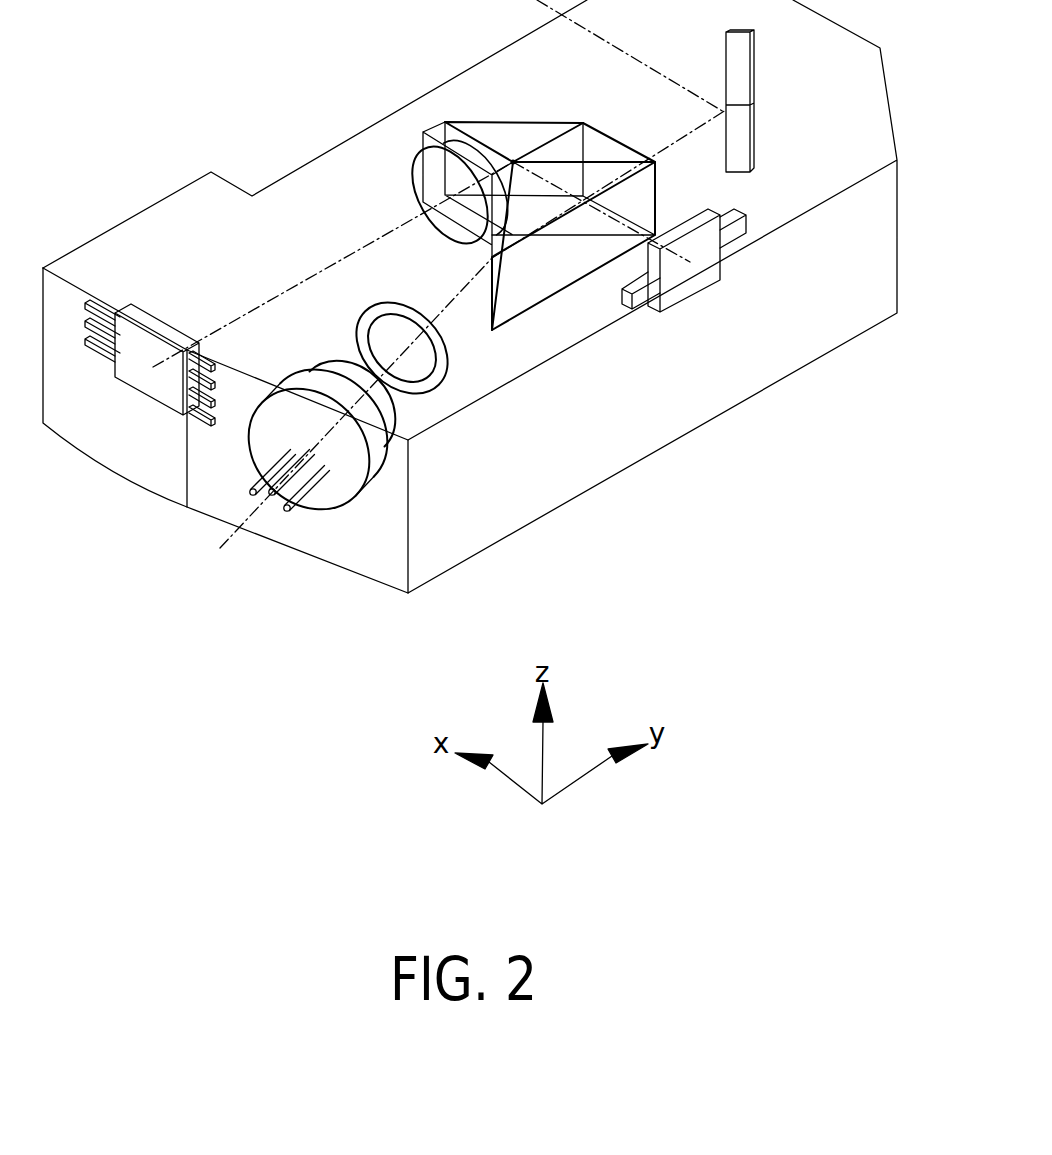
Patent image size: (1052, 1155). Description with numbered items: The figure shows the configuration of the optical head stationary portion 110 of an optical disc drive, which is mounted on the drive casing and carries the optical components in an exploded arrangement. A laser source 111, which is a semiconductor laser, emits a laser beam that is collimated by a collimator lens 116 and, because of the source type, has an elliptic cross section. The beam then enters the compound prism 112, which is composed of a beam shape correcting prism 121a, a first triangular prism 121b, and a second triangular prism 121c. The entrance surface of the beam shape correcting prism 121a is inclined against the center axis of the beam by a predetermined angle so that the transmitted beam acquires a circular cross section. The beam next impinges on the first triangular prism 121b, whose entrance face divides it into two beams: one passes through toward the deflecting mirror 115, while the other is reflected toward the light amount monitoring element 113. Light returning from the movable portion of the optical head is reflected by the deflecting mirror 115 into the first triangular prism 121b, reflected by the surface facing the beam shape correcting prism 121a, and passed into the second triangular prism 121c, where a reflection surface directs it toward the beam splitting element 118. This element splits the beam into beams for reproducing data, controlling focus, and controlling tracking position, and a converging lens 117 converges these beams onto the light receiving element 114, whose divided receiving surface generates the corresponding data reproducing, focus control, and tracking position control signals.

The optical head stationary portion 110 is at (735, 381).
The laser source 111 is at (333, 487).
The compound prism 112 is at (550, 186).
The light amount monitoring element 113 is at (707, 258).
The light receiving element 114 is at (166, 386).
The deflecting mirror 115 is at (743, 84).
The collimator lens 116 is at (368, 350).
The converging lens 117 is at (432, 188).
The beam splitting element 118 is at (450, 142).
The beam shape correcting prism 121a is at (526, 278).
The first triangular prism 121b is at (613, 148).
The second triangular prism 121c is at (507, 140).